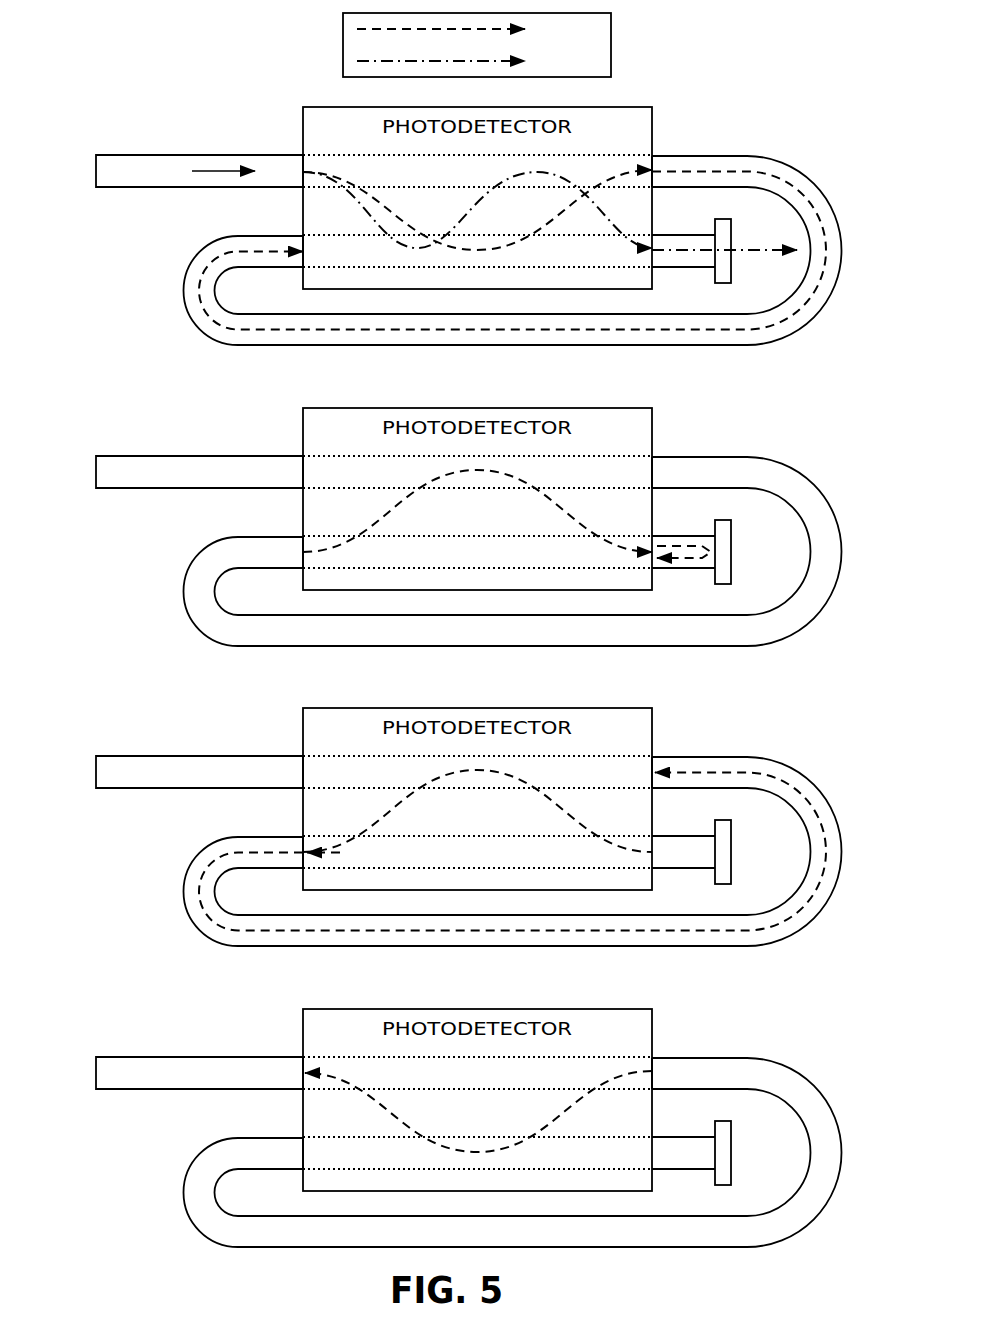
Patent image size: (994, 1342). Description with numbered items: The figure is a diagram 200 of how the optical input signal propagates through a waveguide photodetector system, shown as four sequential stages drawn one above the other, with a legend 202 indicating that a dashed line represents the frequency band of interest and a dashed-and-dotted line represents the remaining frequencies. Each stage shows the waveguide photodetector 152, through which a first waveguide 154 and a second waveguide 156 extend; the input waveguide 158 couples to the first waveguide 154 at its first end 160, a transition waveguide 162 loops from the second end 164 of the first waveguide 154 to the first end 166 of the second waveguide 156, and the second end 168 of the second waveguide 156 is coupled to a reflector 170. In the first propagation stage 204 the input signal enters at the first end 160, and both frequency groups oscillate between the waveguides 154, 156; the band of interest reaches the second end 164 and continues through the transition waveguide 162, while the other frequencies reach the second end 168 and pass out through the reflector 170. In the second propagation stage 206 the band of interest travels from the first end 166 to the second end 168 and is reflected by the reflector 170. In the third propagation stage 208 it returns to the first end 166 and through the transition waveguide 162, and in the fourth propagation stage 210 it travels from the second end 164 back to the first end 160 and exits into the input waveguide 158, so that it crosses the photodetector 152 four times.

The diagram 200 is at (128, 37).
The legend 202 is at (342, 34).
The first propagation stage 204 is at (765, 96).
The second propagation stage 206 is at (765, 397).
The third propagation stage 208 is at (765, 697).
The fourth propagation stage 210 is at (765, 998).
The waveguide photodetector 152 is at (449, 635).
The first waveguide 154 is at (477, 603).
The second waveguide 156 is at (450, 720).
The input waveguide 158 is at (199, 608).
The first end of the first waveguide 160 is at (265, 610).
The transition waveguide 162 is at (534, 697).
The second end of the first waveguide 164 is at (687, 611).
The first end of the second waveguide 166 is at (265, 690).
The second end of the second waveguide 168 is at (687, 683).
The reflector 170 is at (690, 713).